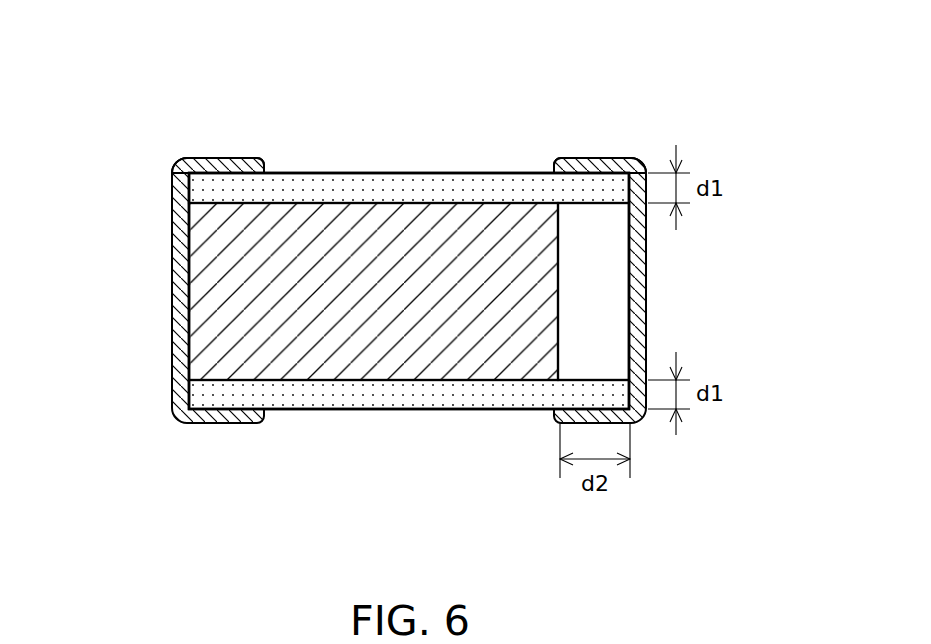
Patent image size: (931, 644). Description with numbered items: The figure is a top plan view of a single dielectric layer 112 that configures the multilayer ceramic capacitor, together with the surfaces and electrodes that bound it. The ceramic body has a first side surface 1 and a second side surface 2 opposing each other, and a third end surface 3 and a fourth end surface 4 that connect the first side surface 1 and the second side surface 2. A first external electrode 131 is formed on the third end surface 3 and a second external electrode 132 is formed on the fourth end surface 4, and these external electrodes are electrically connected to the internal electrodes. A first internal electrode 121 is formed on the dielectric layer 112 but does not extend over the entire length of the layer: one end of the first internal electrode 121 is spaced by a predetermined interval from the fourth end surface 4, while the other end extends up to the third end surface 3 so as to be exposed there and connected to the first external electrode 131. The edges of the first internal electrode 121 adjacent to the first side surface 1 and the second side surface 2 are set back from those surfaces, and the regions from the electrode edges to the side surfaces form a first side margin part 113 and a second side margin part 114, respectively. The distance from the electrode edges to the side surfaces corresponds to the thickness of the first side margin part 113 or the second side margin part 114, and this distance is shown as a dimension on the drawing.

The first side surface 1 is at (429, 147).
The second side surface 2 is at (434, 426).
The third end surface 3 is at (162, 313).
The fourth end surface 4 is at (653, 280).
The dielectric layer 112 is at (615, 333).
The first side margin part 113 is at (192, 188).
The second side margin part 114 is at (200, 397).
The first internal electrode 121 is at (375, 362).
The first external electrode 131 is at (220, 160).
The second external electrode 132 is at (602, 158).